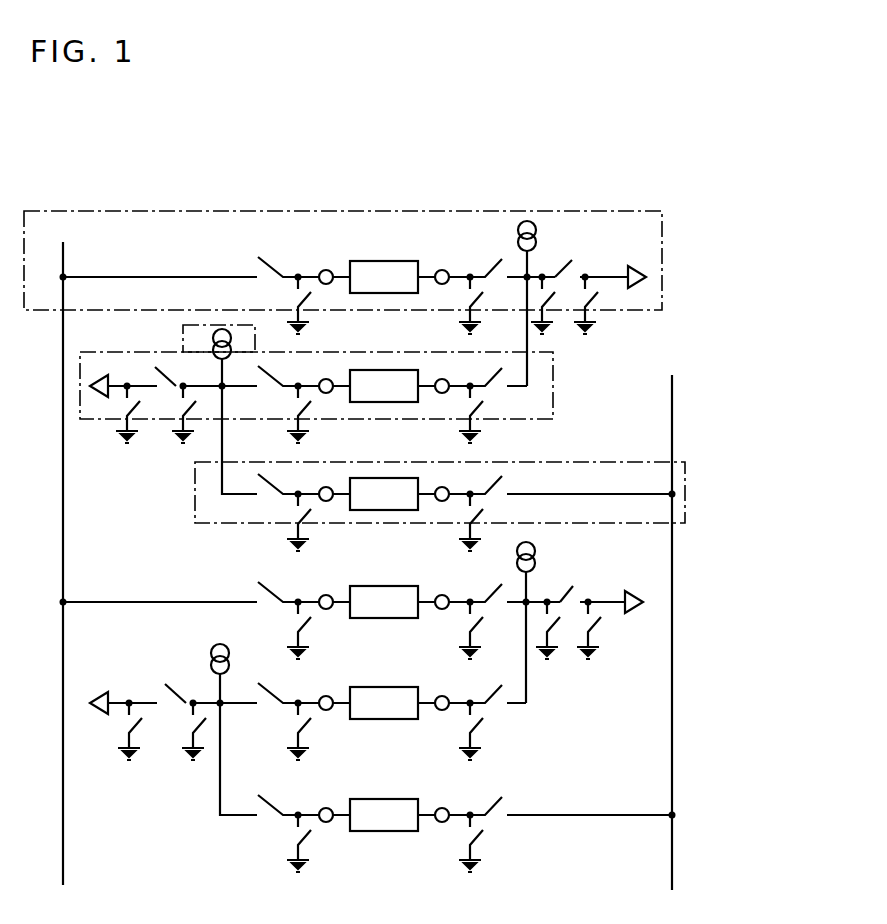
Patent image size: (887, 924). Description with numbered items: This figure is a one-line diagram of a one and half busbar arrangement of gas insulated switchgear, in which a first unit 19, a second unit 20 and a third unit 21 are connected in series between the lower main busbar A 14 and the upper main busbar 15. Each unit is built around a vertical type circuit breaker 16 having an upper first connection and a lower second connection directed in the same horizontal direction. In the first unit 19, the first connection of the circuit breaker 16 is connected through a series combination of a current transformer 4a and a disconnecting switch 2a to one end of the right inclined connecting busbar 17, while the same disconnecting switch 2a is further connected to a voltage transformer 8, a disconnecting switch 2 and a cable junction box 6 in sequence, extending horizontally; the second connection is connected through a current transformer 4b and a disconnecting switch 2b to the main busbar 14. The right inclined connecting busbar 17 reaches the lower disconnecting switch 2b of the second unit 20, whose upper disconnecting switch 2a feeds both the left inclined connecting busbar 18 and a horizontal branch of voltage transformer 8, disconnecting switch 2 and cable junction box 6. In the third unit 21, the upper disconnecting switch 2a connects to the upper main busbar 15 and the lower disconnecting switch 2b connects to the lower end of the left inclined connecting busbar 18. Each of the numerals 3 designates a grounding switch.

The disconnecting switch 2 is at (565, 260).
The disconnecting switch 2a is at (492, 258).
The disconnecting switch 2b is at (265, 258).
The grounding switch 3 is at (306, 298).
The current transformer 4a is at (445, 269).
The current transformer 4b is at (328, 269).
The cable junction box 6 is at (628, 268).
The voltage transformer 8 is at (523, 222).
The main busbar A 14 is at (63, 380).
The upper main busbar 15 is at (672, 400).
The vertical type circuit breaker 16 is at (388, 261).
The right inclined connecting busbar 17 is at (527, 352).
The left inclined connecting busbar 18 is at (222, 432).
The first unit 19 is at (662, 237).
The second unit 20 is at (553, 375).
The third unit 21 is at (685, 485).